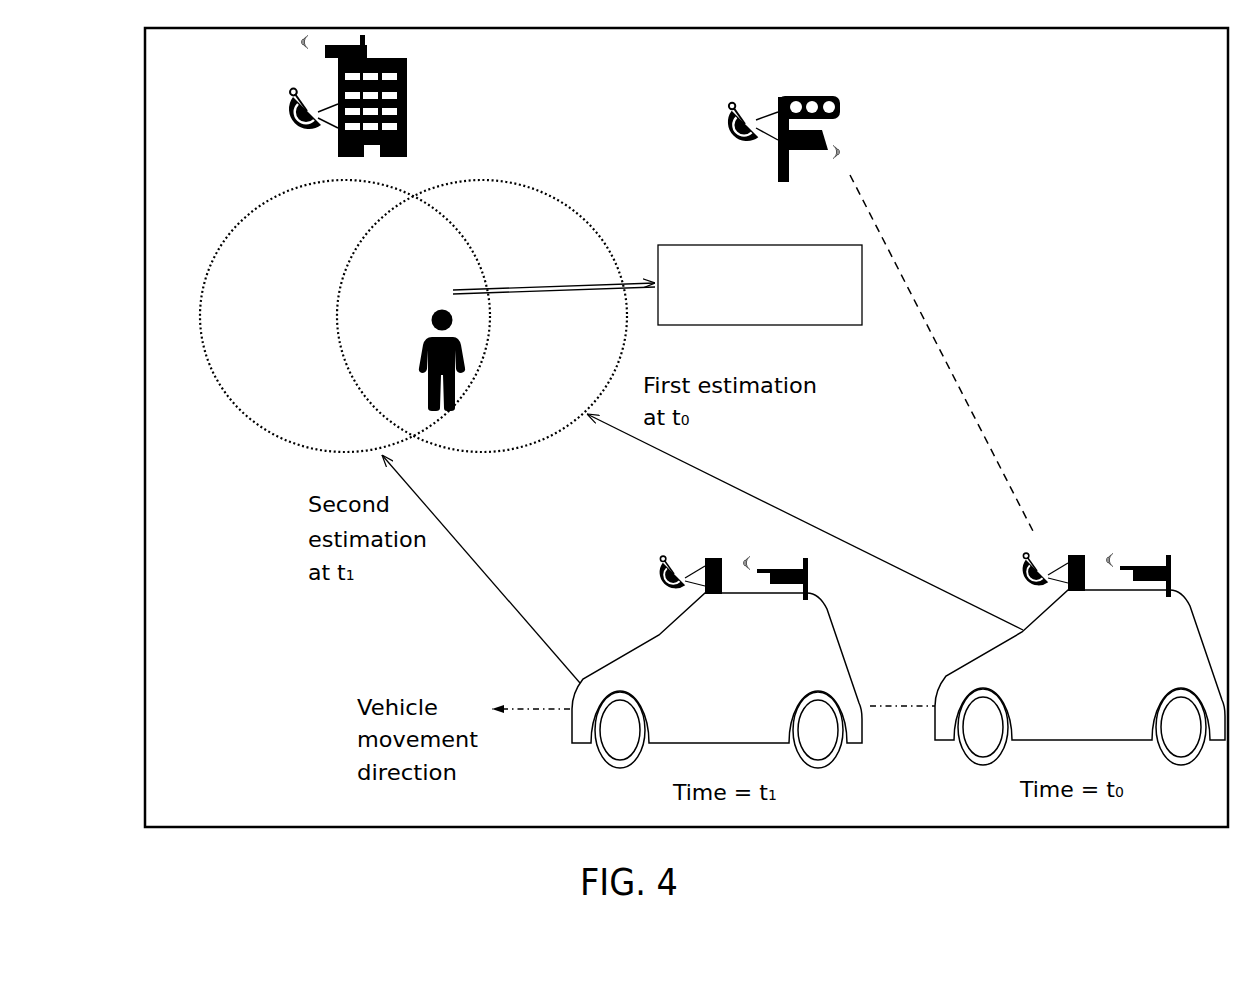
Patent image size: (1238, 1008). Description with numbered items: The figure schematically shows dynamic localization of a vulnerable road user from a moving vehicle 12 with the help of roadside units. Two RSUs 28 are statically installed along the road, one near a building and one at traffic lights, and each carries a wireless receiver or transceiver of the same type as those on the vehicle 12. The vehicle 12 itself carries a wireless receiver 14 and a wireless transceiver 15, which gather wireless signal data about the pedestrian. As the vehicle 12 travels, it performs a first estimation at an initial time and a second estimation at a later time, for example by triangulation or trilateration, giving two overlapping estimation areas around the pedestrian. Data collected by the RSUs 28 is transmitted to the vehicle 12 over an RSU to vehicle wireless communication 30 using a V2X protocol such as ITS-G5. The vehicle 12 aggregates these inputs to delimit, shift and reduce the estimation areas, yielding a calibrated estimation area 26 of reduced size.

The vehicle 12 is at (1107, 681).
The wireless receiver 14 is at (1074, 553).
The wireless transceiver 15 is at (1149, 553).
The calibrated estimation area 26 is at (831, 282).
The RSU 28 is at (738, 88).
The RSU to vehicle wireless communication 30 is at (927, 308).